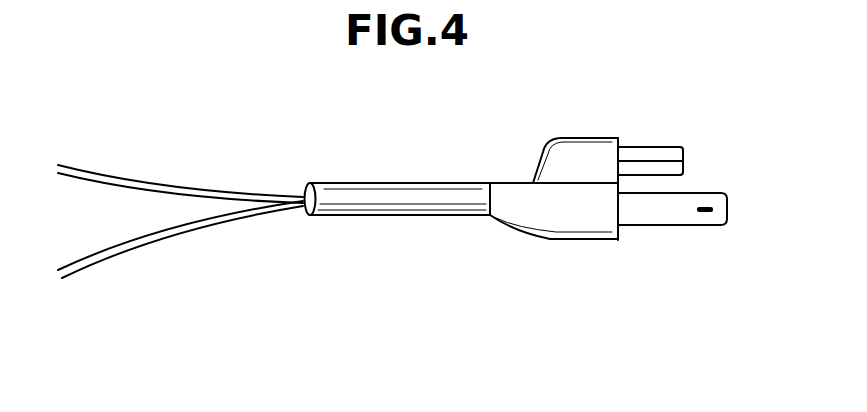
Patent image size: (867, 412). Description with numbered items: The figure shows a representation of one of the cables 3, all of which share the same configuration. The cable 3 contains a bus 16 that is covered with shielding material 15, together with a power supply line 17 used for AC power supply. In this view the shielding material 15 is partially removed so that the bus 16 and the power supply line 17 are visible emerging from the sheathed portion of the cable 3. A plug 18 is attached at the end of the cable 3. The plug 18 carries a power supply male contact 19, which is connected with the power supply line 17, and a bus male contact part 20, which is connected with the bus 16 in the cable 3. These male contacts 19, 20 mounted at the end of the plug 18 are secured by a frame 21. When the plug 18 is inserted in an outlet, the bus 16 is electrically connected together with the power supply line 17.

The cable 3 is at (419, 155).
The shielding material 15 is at (340, 183).
The bus 16 is at (200, 192).
The power supply line 17 is at (197, 219).
The plug 18 is at (580, 140).
The power supply male contact 19 is at (713, 227).
The bus male contact part 20 is at (668, 147).
The frame 21 is at (622, 230).